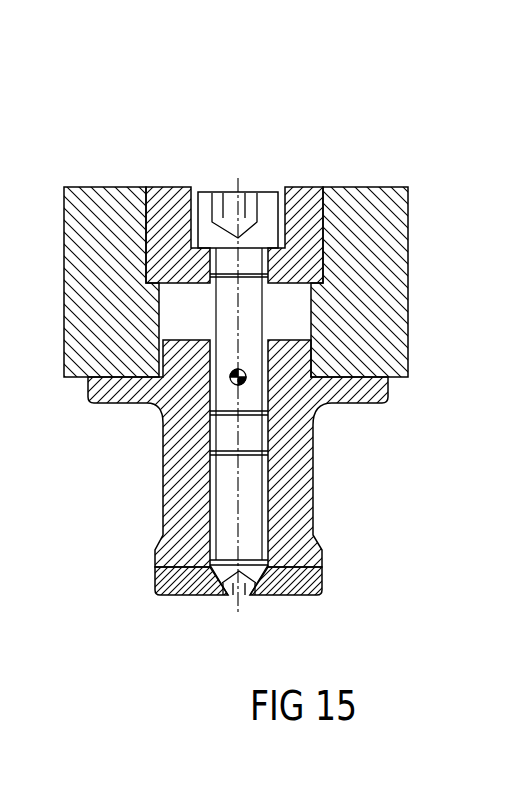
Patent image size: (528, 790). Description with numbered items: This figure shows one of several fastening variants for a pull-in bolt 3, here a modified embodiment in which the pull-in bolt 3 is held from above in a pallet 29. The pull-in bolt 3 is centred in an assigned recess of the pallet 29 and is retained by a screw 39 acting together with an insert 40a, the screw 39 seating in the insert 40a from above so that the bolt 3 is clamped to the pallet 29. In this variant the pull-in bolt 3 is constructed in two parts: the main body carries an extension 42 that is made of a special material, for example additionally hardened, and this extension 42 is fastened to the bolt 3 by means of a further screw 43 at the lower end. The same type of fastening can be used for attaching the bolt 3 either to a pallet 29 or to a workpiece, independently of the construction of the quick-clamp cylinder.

The pallet 29 is at (105, 236).
The screw 39 is at (245, 212).
The insert 40a is at (293, 260).
The pull-in bolt 3 is at (190, 504).
The extension 42 is at (303, 574).
The screw 43 is at (218, 586).